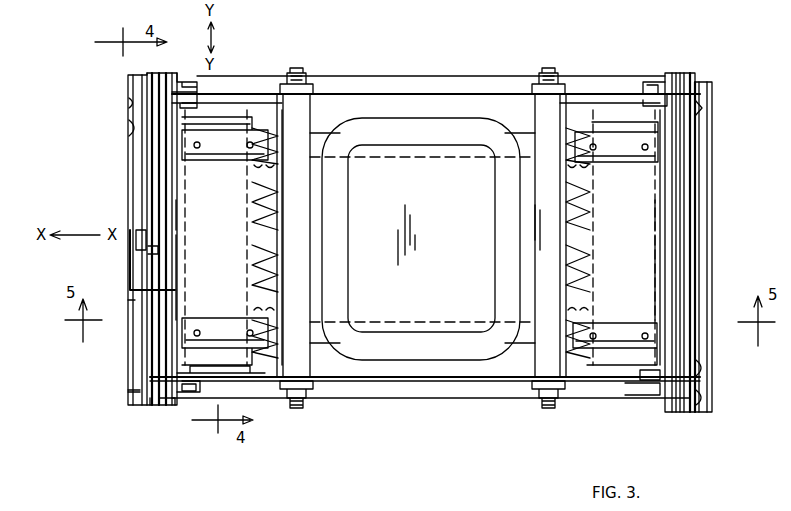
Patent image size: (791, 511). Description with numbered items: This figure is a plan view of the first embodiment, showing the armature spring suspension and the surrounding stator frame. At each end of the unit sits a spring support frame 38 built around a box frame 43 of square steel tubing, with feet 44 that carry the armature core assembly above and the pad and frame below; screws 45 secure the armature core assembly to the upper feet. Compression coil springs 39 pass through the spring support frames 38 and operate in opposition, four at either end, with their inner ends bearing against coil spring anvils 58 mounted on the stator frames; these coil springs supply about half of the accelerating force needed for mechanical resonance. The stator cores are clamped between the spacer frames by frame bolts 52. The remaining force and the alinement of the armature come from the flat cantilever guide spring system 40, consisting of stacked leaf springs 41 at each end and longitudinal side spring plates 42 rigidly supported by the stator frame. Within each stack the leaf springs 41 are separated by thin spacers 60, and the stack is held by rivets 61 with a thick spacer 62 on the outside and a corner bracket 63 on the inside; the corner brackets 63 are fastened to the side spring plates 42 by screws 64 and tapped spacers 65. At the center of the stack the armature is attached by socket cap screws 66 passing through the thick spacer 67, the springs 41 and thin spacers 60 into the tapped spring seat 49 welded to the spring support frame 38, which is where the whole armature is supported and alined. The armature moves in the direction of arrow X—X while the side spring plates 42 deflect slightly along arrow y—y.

The spring support frame 38 is at (240, 102).
The compression coil spring 39 is at (588, 128).
The flat cantilever guide spring system 40 is at (146, 158).
The leaf spring 41 is at (163, 342).
The side spring plate 42 is at (480, 94).
The box frame 43 is at (238, 234).
The foot 44 is at (228, 152).
The screw 45 is at (198, 150).
The spring seat 49 is at (176, 237).
The frame bolt 52 is at (297, 410).
The coil spring anvil 58 is at (283, 279).
The thin spacer 60 is at (162, 404).
The rivet 61 is at (140, 394).
The thick spacer 62 is at (152, 404).
The corner bracket 63 is at (180, 398).
The screw 64 is at (198, 390).
The tapped spacer 65 is at (205, 371).
The socket cap screw 66 is at (136, 244).
The thick spacer 67 is at (150, 252).